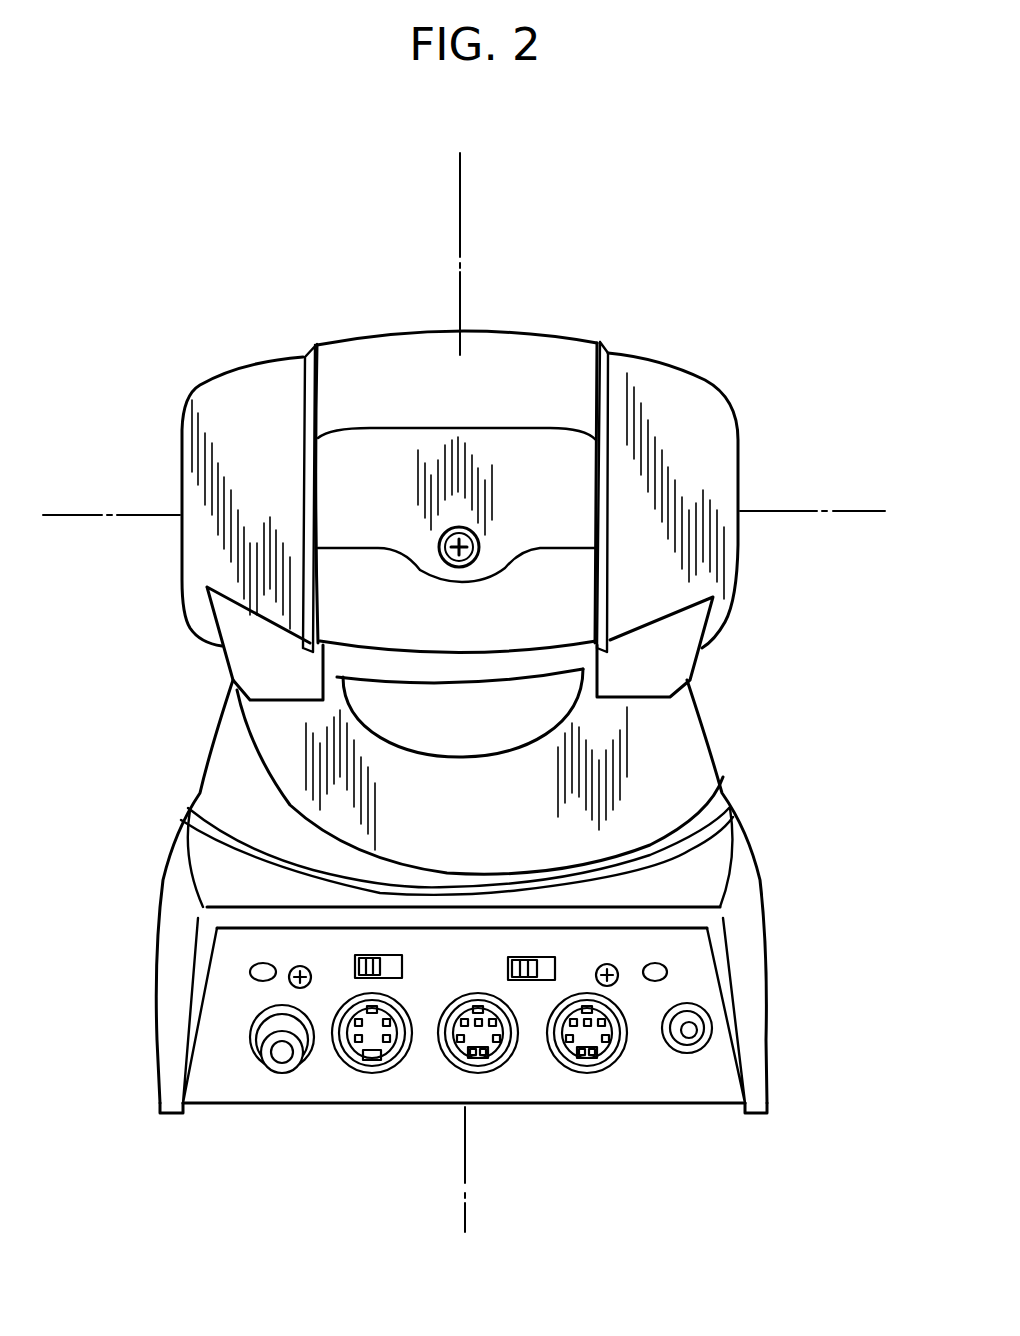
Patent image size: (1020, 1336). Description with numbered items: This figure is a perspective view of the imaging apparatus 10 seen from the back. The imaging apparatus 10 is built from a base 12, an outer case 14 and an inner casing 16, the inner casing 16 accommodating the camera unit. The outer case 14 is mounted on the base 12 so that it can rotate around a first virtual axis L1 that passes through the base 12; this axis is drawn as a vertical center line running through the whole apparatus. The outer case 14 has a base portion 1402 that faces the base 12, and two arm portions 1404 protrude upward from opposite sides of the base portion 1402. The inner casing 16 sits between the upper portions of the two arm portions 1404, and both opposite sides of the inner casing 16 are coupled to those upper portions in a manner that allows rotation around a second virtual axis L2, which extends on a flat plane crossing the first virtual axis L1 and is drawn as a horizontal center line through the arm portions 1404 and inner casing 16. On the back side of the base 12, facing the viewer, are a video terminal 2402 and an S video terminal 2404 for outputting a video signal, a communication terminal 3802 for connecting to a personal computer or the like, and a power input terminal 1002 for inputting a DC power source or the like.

The imaging apparatus 10 is at (368, 268).
The base 12 is at (498, 936).
The outer case 14 is at (204, 745).
The inner casing 16 is at (553, 355).
The base portion 1402 is at (646, 741).
The arm portions 1404 is at (237, 395).
The video terminal 2402 is at (282, 1070).
The S video terminal 2404 is at (377, 1065).
The communication terminal 3802 is at (500, 1070).
The power input terminal 1002 is at (690, 1047).
The first virtual axis L1 is at (463, 197).
The second virtual axis L2 is at (853, 511).